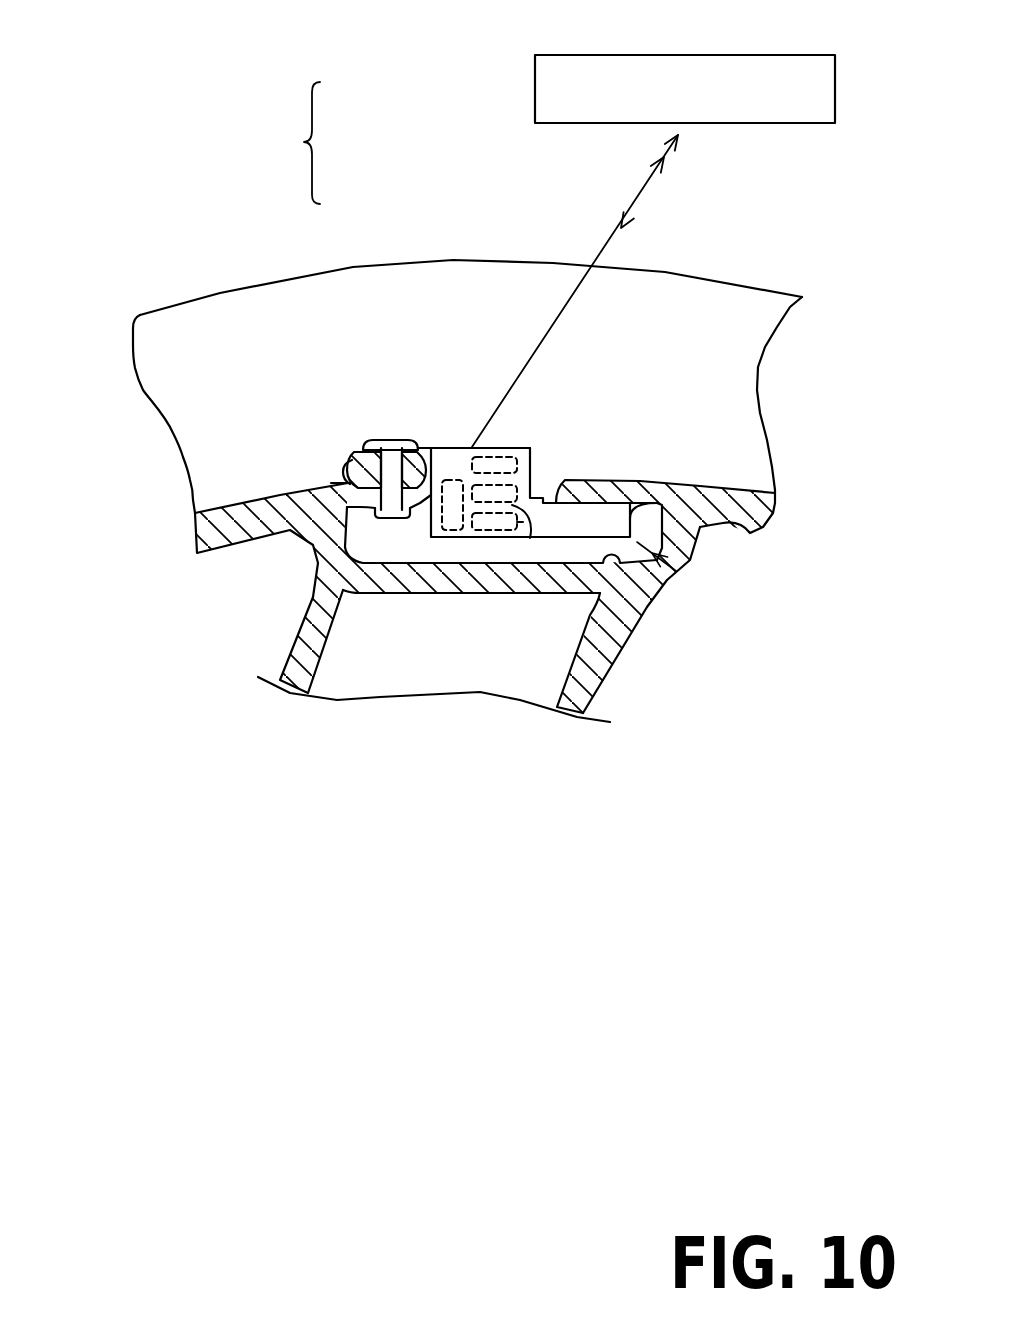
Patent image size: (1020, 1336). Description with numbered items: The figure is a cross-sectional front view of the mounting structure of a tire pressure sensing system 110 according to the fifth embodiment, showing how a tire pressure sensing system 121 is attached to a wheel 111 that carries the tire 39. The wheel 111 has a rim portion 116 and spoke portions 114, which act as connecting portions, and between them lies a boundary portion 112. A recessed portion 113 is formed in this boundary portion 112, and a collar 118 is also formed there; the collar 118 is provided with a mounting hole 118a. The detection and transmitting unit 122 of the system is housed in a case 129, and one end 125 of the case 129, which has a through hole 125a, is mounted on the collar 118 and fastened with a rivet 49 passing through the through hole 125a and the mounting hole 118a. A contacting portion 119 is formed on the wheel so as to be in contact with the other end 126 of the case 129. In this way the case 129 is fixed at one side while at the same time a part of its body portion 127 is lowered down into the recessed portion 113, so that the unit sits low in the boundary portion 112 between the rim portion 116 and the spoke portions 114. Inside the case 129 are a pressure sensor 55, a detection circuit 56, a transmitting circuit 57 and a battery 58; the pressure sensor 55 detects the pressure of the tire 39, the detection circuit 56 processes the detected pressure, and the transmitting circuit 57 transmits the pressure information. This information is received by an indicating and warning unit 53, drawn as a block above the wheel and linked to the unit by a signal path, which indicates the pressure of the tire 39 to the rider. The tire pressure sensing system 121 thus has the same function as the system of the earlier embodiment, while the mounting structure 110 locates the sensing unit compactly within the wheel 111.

The mounting structure of a tire pressure sensing system 110 is at (205, 58).
The tire 39 is at (667, 265).
The indicating and warning unit 53 is at (535, 88).
The tire pressure sensing system 121 is at (281, 143).
The detection and transmitting unit 122 is at (440, 413).
The one end of the case 125 is at (355, 465).
The through hole 125a is at (345, 468).
The body portion of the case 127 is at (432, 447).
The rivet 49 is at (385, 440).
The battery 58 is at (452, 448).
The case 129 is at (512, 437).
The pressure sensor 55 is at (513, 440).
The contacting portion 119 is at (557, 497).
The other end of the case 126 is at (673, 484).
The collar 118 is at (422, 500).
The mounting hole 118a is at (370, 515).
The detection circuit 56 is at (510, 540).
The transmitting circuit 57 is at (527, 538).
The rim portion 116 is at (725, 510).
The boundary portion 112 is at (683, 577).
The recessed portion 113 is at (676, 571).
The spoke portions 114 is at (623, 640).
The wheel 111 is at (635, 727).